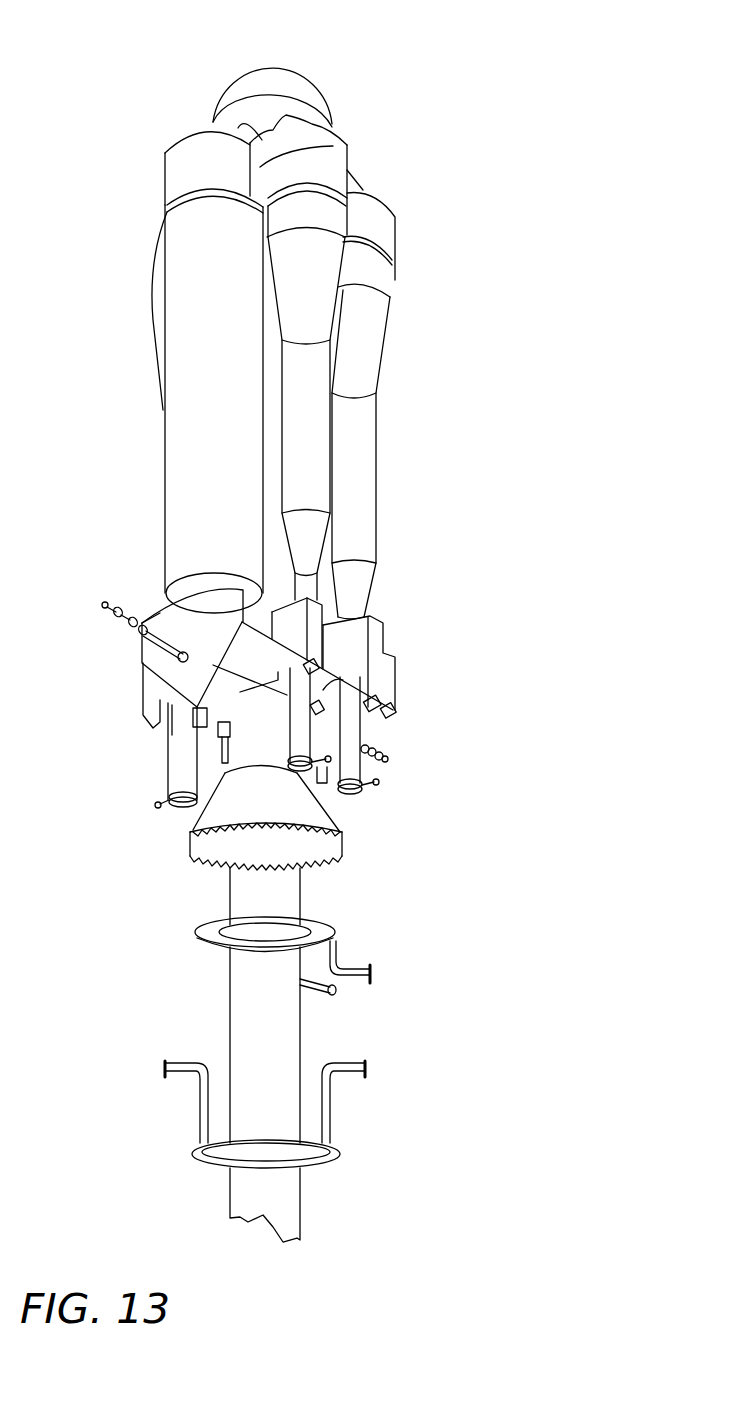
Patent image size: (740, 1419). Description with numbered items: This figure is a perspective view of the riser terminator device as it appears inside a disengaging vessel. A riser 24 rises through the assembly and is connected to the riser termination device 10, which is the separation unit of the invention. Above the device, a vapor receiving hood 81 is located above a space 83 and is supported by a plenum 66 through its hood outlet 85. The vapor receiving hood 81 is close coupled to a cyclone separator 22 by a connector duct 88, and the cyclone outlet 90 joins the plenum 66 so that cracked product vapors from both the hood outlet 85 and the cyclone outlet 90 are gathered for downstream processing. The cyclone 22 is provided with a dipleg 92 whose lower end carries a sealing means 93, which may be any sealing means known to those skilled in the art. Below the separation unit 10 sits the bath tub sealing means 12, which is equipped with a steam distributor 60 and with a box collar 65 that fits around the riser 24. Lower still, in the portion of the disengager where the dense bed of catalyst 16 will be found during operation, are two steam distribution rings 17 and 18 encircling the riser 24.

The riser termination device 10 is at (190, 458).
The bath tub sealing means 12 is at (173, 623).
The dense bed of catalyst 16 is at (345, 1032).
The steam distribution ring 17 is at (202, 938).
The steam distribution ring 18 is at (190, 1063).
The cyclone separator 22 is at (310, 303).
The riser 24 is at (257, 872).
The steam distributor 60 is at (128, 633).
The collar 65 is at (340, 677).
The plenum 66 is at (290, 77).
The vapor receiving hood 81 is at (178, 168).
The space 83 is at (168, 198).
The hood outlet 85 is at (247, 125).
The connector duct 88 is at (260, 167).
The cyclone outlet 90 is at (300, 125).
The dipleg 92 is at (298, 730).
The sealing means 93 is at (303, 770).